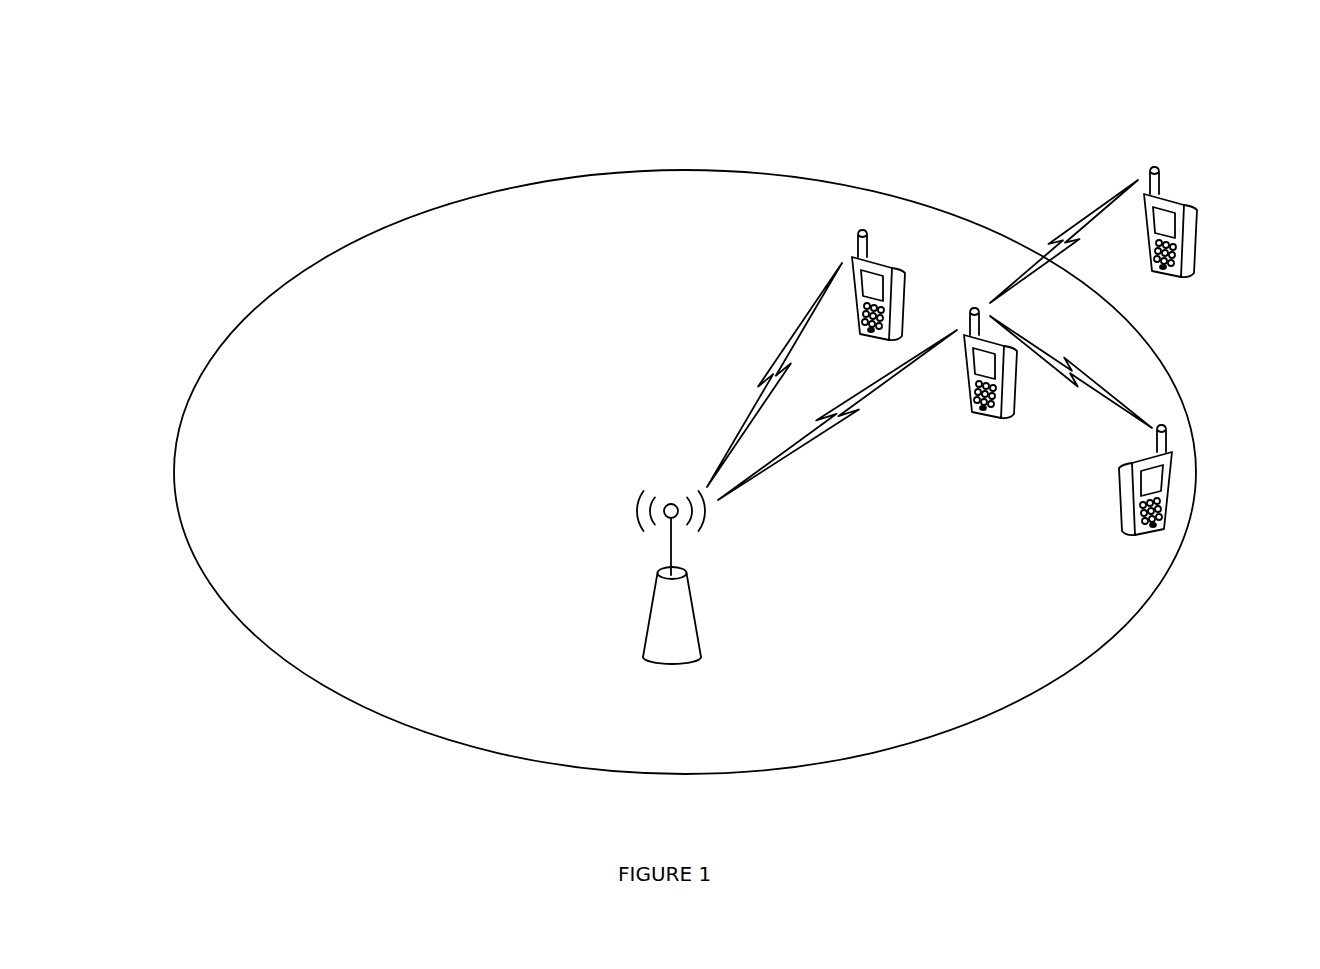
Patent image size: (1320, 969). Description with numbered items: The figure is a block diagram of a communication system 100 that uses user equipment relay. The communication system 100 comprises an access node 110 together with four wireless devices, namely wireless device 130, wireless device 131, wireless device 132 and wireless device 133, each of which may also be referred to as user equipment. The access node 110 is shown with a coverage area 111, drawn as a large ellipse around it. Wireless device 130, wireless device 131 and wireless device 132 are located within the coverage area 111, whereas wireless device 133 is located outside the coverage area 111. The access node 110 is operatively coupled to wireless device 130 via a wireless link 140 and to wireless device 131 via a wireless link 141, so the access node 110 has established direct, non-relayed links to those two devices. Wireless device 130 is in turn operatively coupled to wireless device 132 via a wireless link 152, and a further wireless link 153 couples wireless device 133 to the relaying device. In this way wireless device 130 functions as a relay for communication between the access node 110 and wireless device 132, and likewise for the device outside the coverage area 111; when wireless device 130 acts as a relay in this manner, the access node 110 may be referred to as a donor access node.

The communication system 100 is at (135, 84).
The access node 110 is at (656, 655).
The coverage area 111 is at (690, 222).
The wireless device 130 is at (985, 416).
The wireless device 131 is at (907, 290).
The wireless device 132 is at (1131, 535).
The wireless device 133 is at (1197, 196).
The wireless link 140 is at (845, 422).
The wireless link 141 is at (769, 355).
The wireless link 152 is at (1112, 397).
The wireless link 153 is at (1098, 210).